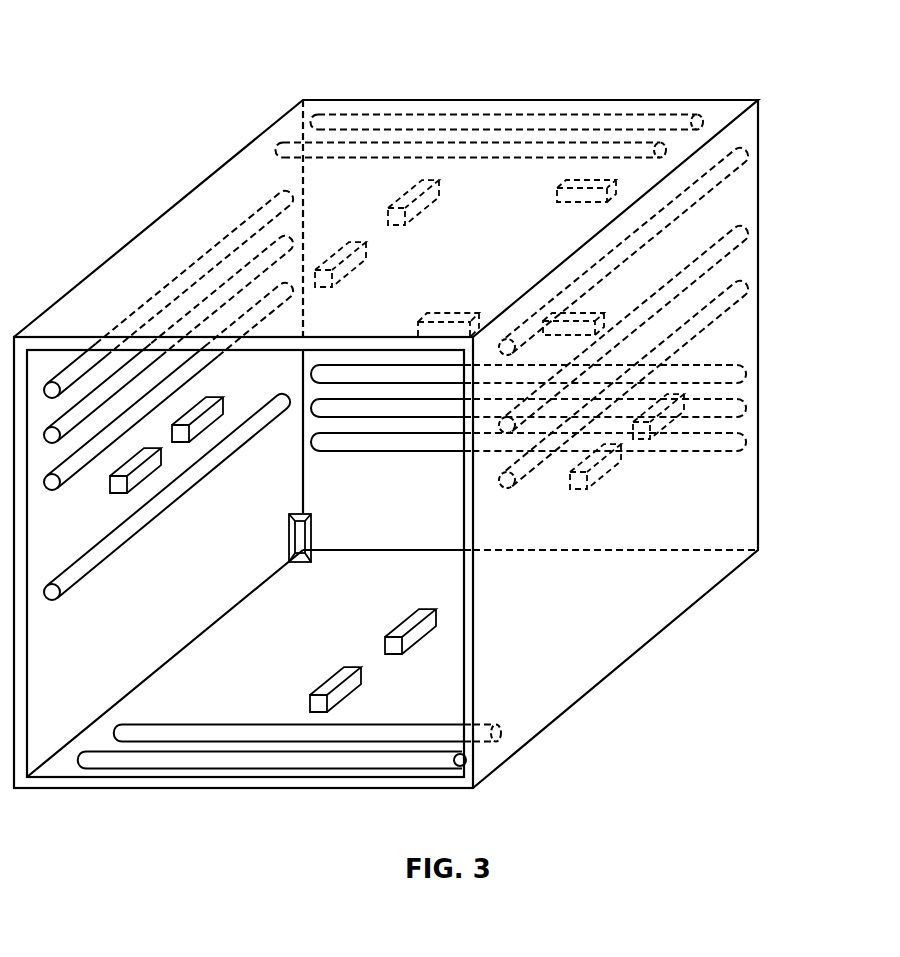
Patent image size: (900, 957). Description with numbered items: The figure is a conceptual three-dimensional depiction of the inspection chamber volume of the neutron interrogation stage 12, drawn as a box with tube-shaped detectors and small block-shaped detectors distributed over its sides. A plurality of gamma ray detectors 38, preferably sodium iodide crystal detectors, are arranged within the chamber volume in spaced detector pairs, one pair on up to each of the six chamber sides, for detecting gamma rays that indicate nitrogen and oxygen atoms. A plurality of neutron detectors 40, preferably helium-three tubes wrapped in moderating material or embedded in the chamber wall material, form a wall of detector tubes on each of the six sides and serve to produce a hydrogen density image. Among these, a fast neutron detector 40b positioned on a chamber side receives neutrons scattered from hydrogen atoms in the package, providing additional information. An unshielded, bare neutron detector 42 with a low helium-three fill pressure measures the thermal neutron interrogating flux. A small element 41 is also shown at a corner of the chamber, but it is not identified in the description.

The neutron interrogation stage 12 is at (822, 134).
The gamma ray detectors 38 is at (366, 253).
The neutron detectors 40 is at (543, 110).
The fast neutron detector 40b is at (125, 543).
The corner block 41 is at (312, 522).
The unshielded neutron detector 42 is at (594, 202).